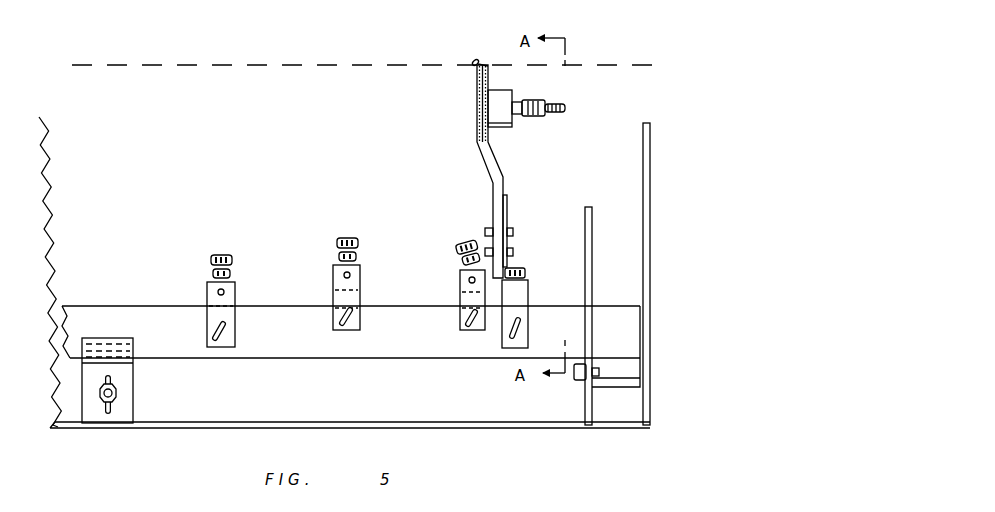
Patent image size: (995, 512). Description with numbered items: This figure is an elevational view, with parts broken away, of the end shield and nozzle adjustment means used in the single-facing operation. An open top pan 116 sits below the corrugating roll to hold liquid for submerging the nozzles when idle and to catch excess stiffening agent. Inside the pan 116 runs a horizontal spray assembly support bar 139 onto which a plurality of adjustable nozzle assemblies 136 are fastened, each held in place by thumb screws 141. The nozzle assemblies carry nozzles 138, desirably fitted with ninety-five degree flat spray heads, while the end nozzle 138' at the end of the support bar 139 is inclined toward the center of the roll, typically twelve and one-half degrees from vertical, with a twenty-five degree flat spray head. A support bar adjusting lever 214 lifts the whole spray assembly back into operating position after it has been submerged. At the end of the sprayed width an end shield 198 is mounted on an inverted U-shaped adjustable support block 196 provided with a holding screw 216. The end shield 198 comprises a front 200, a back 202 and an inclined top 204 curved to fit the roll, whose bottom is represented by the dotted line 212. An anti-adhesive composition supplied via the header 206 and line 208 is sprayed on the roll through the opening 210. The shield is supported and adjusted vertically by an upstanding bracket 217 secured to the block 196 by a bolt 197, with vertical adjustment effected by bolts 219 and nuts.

The pan 116 is at (652, 289).
The nozzle assembly 136 is at (233, 318).
The nozzle 138 is at (284, 245).
The end nozzle 138' is at (457, 239).
The spray assembly support bar 139 is at (156, 313).
The thumb screw 141 is at (212, 334).
The adjustable support block 196 is at (529, 297).
The bolt 197 is at (525, 272).
The end shield 198 is at (498, 167).
The front 200 is at (478, 113).
The back 202 is at (490, 88).
The inclined top 204 is at (478, 61).
The header 206 is at (506, 119).
The line 208 is at (553, 107).
The opening 210 is at (478, 70).
The dotted line 212 is at (360, 65).
The support bar adjusting lever 214 is at (591, 244).
The holding screw 216 is at (526, 331).
The upstanding bracket 217 is at (506, 222).
The bolt 219 is at (514, 251).